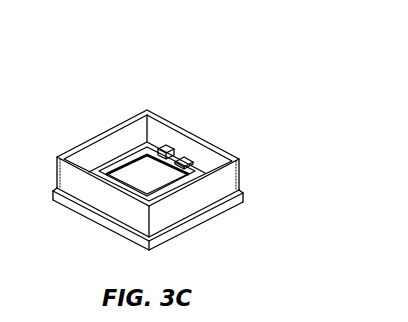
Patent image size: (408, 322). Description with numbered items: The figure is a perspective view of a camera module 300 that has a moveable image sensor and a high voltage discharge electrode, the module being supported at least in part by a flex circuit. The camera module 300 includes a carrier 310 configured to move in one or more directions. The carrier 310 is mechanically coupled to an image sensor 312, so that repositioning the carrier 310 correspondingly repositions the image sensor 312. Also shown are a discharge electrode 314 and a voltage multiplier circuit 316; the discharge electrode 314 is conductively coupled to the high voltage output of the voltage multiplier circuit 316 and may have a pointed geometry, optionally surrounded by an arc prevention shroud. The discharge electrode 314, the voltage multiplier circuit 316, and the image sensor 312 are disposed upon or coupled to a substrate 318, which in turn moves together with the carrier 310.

The camera module 300 is at (78, 78).
The carrier 310 is at (240, 175).
The image sensor 312 is at (136, 187).
The discharge electrode 314 is at (164, 146).
The voltage multiplier circuit 316 is at (185, 157).
The substrate 318 is at (243, 195).